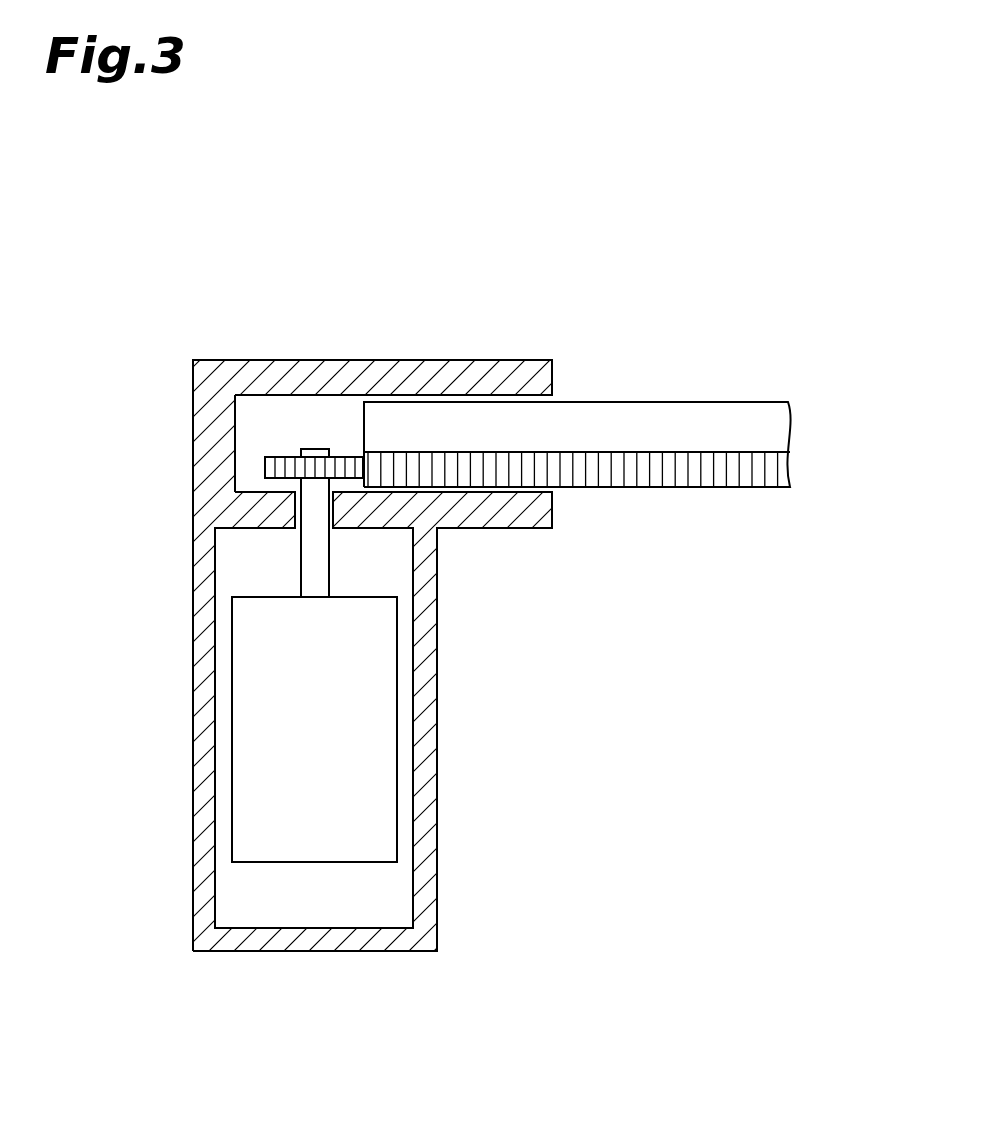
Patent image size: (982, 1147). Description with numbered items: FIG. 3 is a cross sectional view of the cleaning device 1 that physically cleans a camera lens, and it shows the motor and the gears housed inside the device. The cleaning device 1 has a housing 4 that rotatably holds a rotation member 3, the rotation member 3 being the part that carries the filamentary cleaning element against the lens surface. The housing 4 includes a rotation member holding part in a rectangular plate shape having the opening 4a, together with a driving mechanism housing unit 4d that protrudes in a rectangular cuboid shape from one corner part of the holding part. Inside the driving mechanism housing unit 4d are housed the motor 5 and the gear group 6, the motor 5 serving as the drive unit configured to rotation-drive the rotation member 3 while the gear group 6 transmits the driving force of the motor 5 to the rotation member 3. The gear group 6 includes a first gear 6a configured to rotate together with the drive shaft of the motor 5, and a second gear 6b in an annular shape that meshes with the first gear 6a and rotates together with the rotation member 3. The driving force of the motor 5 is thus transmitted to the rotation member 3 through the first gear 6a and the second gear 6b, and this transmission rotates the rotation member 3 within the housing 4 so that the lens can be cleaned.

The cleaning device 1 is at (491, 586).
The rotation member 3 is at (705, 420).
The housing 4 is at (491, 594).
The opening 4a is at (553, 368).
The driving mechanism housing unit 4d is at (219, 360).
The motor 5 is at (365, 773).
The gear group 6 is at (527, 377).
The first gear 6a is at (345, 468).
The second gear 6b is at (462, 462).